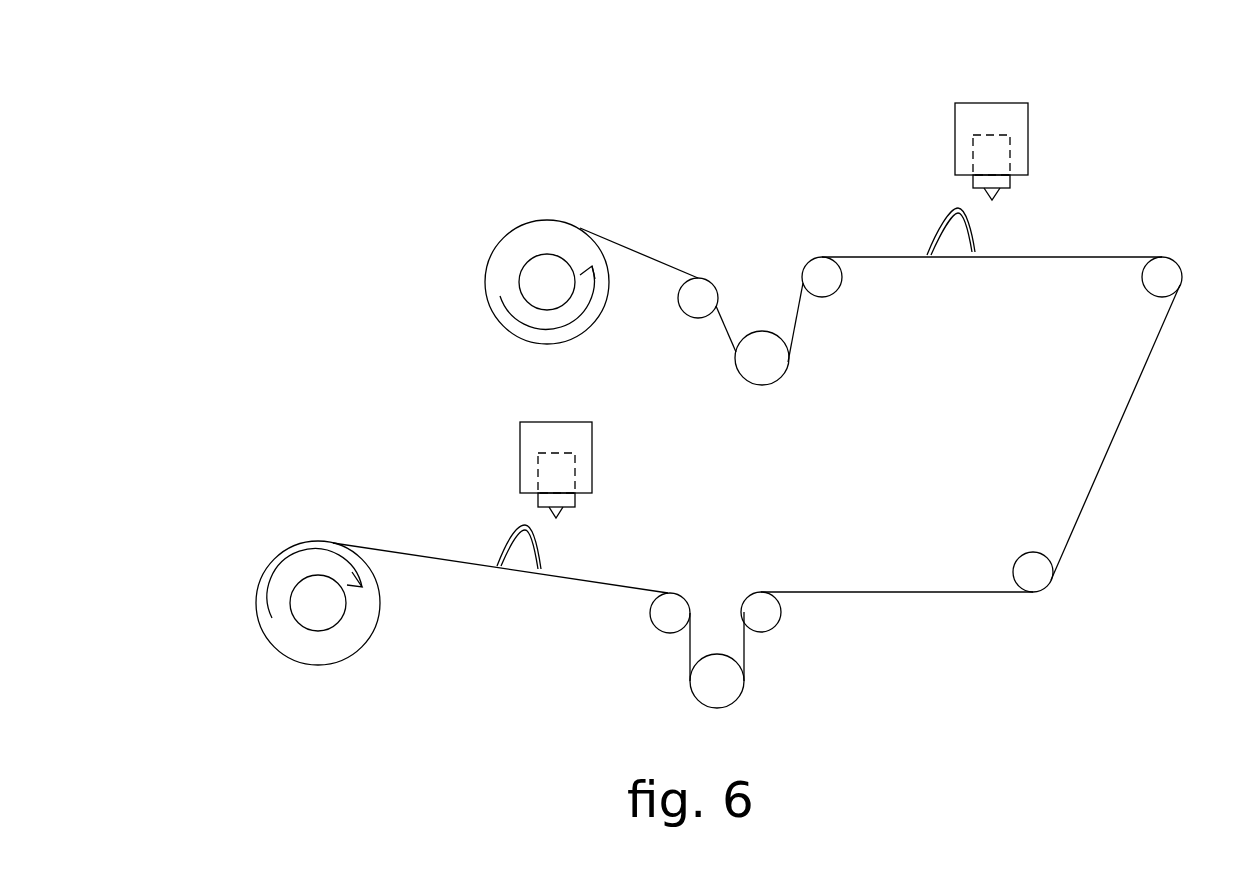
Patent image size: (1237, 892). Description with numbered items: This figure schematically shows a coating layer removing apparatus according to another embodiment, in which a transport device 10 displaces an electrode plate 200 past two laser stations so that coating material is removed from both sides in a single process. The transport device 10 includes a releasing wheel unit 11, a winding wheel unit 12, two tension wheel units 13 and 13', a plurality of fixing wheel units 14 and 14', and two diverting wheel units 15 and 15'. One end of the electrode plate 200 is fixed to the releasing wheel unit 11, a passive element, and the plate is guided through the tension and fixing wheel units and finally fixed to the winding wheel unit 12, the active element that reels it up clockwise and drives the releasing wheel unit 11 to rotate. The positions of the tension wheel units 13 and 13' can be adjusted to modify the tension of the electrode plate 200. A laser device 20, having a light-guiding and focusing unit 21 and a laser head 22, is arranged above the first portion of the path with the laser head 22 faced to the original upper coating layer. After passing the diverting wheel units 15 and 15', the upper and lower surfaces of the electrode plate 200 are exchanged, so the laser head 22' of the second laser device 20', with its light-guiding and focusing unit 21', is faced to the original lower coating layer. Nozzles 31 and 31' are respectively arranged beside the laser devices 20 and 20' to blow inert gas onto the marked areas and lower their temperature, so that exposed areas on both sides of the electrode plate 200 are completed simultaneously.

The transport device 10 is at (685, 168).
The releasing wheel unit 11 is at (318, 603).
The winding wheel unit 12 is at (515, 240).
The tension wheel unit 13 is at (759, 688).
The fixing wheel unit 14 is at (749, 625).
The diverting wheel unit 15 is at (1015, 547).
The tension wheel unit 13' is at (796, 362).
The fixing wheel unit 14' is at (799, 294).
The diverting wheel unit 15' is at (1130, 297).
The laser device 20 is at (544, 449).
The light-guiding and focusing unit 21 is at (615, 447).
The laser head 22 is at (615, 485).
The laser device 20' is at (984, 133).
The light-guiding and focusing unit 21' is at (1053, 131).
The laser head 22' is at (1055, 167).
The nozzle 31 is at (467, 525).
The nozzle 31' is at (901, 211).
The electrode plate 200 is at (1090, 495).